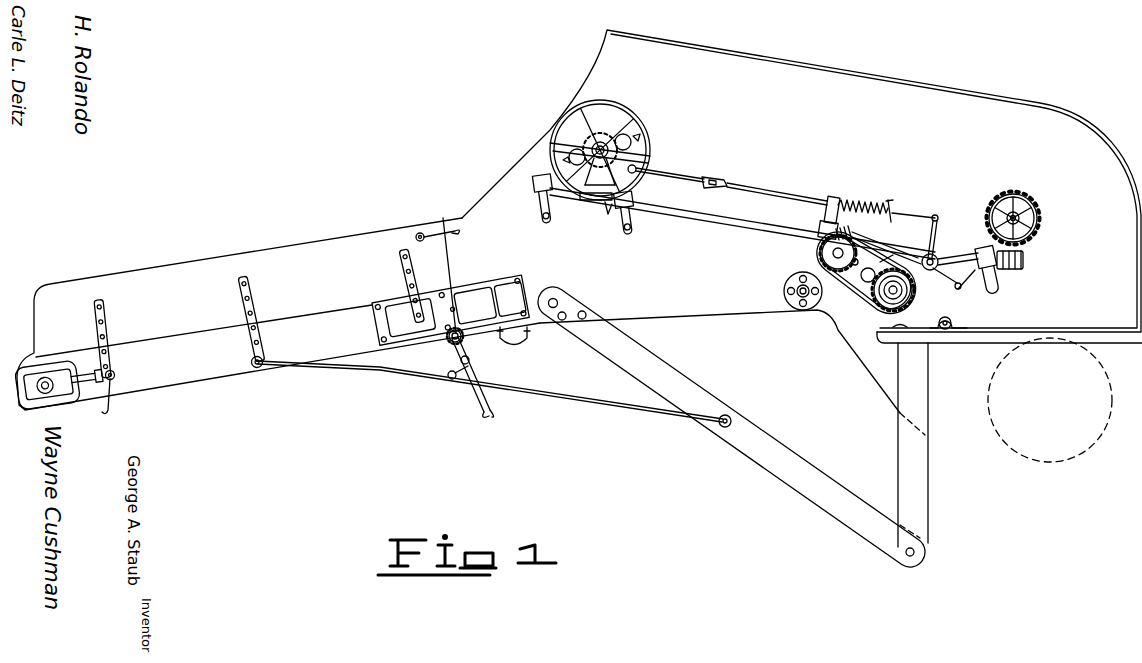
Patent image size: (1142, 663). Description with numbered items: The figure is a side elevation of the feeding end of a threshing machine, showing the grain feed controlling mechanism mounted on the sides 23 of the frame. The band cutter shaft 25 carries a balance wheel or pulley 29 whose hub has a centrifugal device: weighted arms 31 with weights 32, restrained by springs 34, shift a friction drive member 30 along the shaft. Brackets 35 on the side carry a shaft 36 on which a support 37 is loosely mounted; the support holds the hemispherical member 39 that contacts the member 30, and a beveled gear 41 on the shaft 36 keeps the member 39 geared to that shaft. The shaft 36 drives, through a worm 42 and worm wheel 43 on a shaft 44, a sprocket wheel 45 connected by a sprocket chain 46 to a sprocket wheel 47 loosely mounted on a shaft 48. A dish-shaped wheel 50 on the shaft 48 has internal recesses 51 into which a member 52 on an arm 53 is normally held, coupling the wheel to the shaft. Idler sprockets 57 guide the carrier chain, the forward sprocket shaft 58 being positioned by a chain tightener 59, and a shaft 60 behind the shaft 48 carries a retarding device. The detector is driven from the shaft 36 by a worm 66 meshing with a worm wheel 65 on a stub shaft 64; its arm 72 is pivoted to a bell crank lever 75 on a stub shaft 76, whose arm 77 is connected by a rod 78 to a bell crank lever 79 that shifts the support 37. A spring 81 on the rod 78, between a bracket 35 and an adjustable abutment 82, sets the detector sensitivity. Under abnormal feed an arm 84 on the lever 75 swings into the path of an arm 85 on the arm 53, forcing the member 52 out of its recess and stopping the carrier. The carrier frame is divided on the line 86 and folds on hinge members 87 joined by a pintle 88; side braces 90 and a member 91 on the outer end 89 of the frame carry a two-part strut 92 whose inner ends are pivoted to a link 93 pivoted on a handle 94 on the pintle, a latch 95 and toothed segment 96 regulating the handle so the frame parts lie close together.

The sides of the frame 23 is at (802, 246).
The shaft 25 is at (594, 145).
The balance wheel or pulley 29 is at (634, 133).
The friction drive member 30 is at (612, 112).
The arms 31 is at (569, 150).
The weights 32 is at (563, 163).
The springs 34 is at (642, 142).
The brackets 35 is at (535, 209).
The shaft 36 is at (716, 213).
The support 37 is at (585, 200).
The hemispherical member 39 is at (599, 180).
The beveled gear 41 is at (608, 216).
The worm 42 is at (820, 223).
The worm wheel 43 is at (848, 238).
The shaft 44 is at (824, 251).
The sprocket wheel 45 is at (866, 275).
The sprocket chain 46 is at (862, 304).
The sprocket wheel 47 is at (835, 300).
The shaft 48 is at (910, 318).
The dish-shaped wheel 50 is at (915, 296).
The internal recesses 51 is at (890, 323).
The member 52 is at (880, 262).
The arm 53 is at (908, 286).
The idler sprockets 57 is at (528, 341).
The shaft 58 is at (40, 378).
The chain tightener 59 is at (74, 395).
The shaft 60 is at (947, 330).
The stub shafts 64 is at (1038, 226).
The worm wheel 65 is at (1041, 208).
The worm 66 is at (1023, 262).
The arm 72 is at (988, 281).
The bell crank lever 75 is at (960, 289).
The stub shaft 76 is at (950, 265).
The arm 77 is at (934, 238).
The rod 78 is at (758, 192).
The bell crank lever 79 is at (648, 178).
The spring 81 is at (855, 205).
The abutment 82 is at (893, 206).
The arm 84 is at (905, 255).
The arm 85 is at (864, 263).
The line 86 is at (446, 263).
The hinge members 87 is at (470, 288).
The pintle 88 is at (465, 340).
The outer end of the frame 89 is at (278, 314).
The side braces 90 is at (896, 476).
The member 91 is at (258, 338).
The two-part strut member 92 is at (558, 398).
The link 93 is at (450, 379).
The handle 94 is at (479, 402).
The latch 95 is at (480, 371).
The toothed segment 96 is at (447, 342).